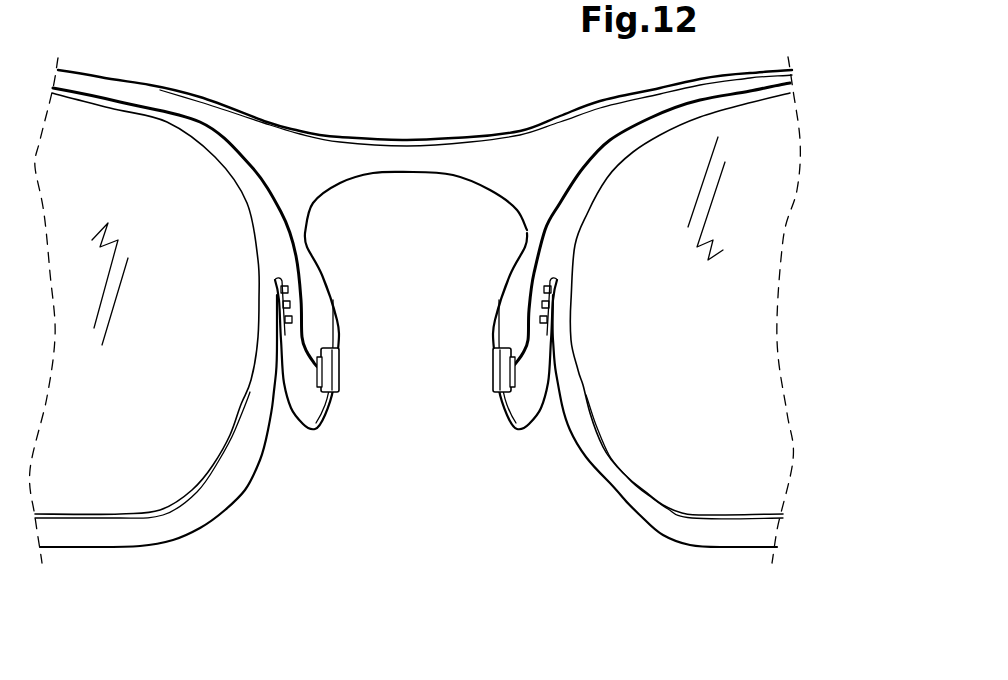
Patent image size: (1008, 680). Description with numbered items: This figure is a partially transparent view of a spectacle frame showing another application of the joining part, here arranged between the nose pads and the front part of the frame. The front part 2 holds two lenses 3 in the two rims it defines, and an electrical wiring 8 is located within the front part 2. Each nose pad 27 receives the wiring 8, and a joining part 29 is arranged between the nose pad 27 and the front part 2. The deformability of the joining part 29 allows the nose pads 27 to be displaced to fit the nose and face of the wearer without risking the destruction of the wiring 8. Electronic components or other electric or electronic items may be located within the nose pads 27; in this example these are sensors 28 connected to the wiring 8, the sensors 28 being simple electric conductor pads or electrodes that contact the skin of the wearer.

The front part 2 is at (210, 493).
The lenses 3 is at (195, 323).
The electrical wiring 8 is at (257, 168).
The nose pad 27 is at (313, 436).
The sensors 28 is at (340, 360).
The joining part 29 is at (317, 262).